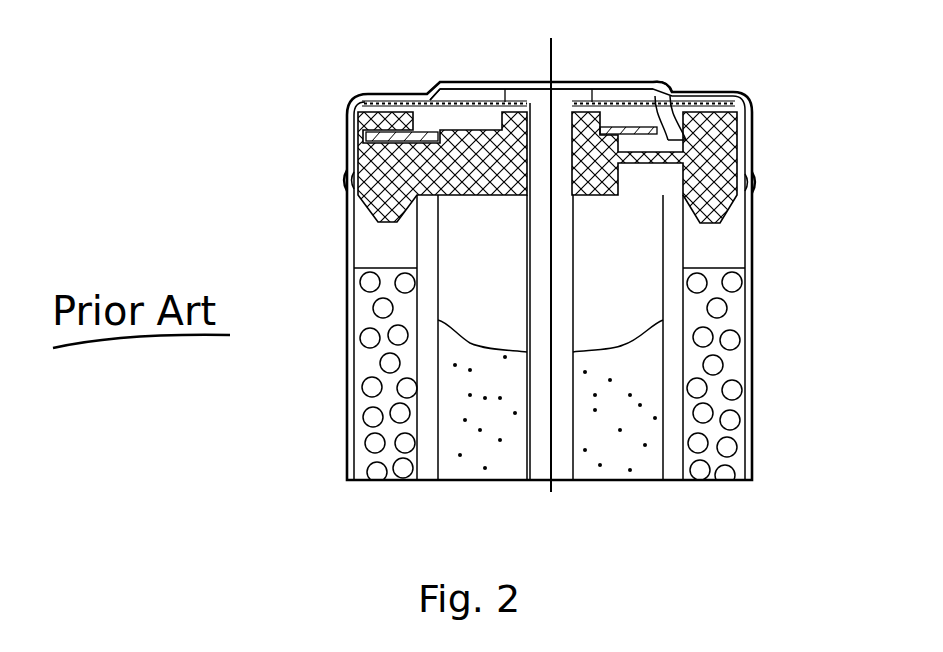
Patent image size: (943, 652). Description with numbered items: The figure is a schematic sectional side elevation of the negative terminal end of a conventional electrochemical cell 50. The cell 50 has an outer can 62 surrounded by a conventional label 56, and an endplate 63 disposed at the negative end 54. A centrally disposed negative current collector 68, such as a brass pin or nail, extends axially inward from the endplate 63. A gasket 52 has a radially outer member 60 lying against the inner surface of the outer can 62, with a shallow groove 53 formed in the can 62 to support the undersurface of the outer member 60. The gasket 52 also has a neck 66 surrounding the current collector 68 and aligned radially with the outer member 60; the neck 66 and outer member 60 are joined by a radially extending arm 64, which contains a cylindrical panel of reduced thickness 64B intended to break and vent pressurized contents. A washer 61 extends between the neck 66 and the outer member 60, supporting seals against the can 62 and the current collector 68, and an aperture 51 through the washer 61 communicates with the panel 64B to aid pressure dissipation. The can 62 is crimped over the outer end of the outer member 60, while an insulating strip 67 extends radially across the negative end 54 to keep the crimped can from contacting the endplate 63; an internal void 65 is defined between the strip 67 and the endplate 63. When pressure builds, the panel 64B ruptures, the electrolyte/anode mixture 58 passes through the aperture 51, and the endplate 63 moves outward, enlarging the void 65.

The conventional cell 50 is at (309, 77).
The aperture 51 is at (657, 120).
The gasket 52 is at (598, 200).
The shallow groove 53 is at (347, 181).
The negative end 54 is at (638, 64).
The label 56 is at (753, 302).
The electrolyte/anode mixture 58 is at (612, 482).
The radially outer member 60 is at (740, 153).
The washer 61 is at (666, 133).
The outer can 62 is at (753, 229).
The endplate 63 is at (470, 80).
The radially extending arm 64 is at (478, 208).
The panel of reduced thickness 64B is at (640, 166).
The internal void 65 is at (611, 93).
The neck 66 is at (428, 98).
The insulating strip 67 is at (477, 100).
The negative current collector 68 is at (527, 267).